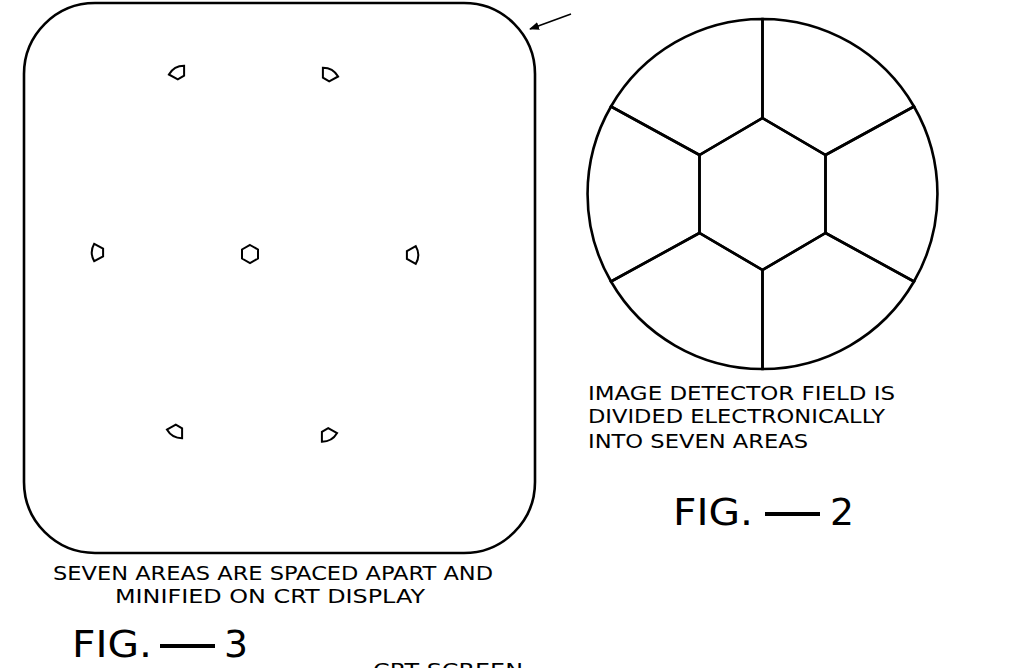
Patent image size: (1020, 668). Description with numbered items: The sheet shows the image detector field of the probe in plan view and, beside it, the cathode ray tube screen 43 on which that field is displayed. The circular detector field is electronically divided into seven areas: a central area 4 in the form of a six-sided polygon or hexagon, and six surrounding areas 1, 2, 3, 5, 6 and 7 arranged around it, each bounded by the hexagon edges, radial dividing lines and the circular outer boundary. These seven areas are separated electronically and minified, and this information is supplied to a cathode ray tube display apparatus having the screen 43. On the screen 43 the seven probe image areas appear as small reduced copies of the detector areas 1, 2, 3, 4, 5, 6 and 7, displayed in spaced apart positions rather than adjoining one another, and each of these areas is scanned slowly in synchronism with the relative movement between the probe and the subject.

In FIG. 3, the area 1 is at (163, 67).
In FIG. 2, the area 1 is at (687, 87).
In FIG. 3, the area 2 is at (342, 72).
In FIG. 2, the area 2 is at (839, 87).
In FIG. 3, the area 3 is at (107, 250).
In FIG. 2, the area 3 is at (644, 194).
In FIG. 3, the central area 4 is at (262, 251).
In FIG. 2, the central area 4 is at (763, 194).
In FIG. 3, the area 5 is at (421, 252).
In FIG. 2, the area 5 is at (882, 194).
In FIG. 3, the area 6 is at (163, 437).
In FIG. 2, the area 6 is at (687, 301).
In FIG. 3, the area 7 is at (340, 443).
In FIG. 2, the area 7 is at (839, 301).
In FIG. 3, the screen 43 is at (537, 70).